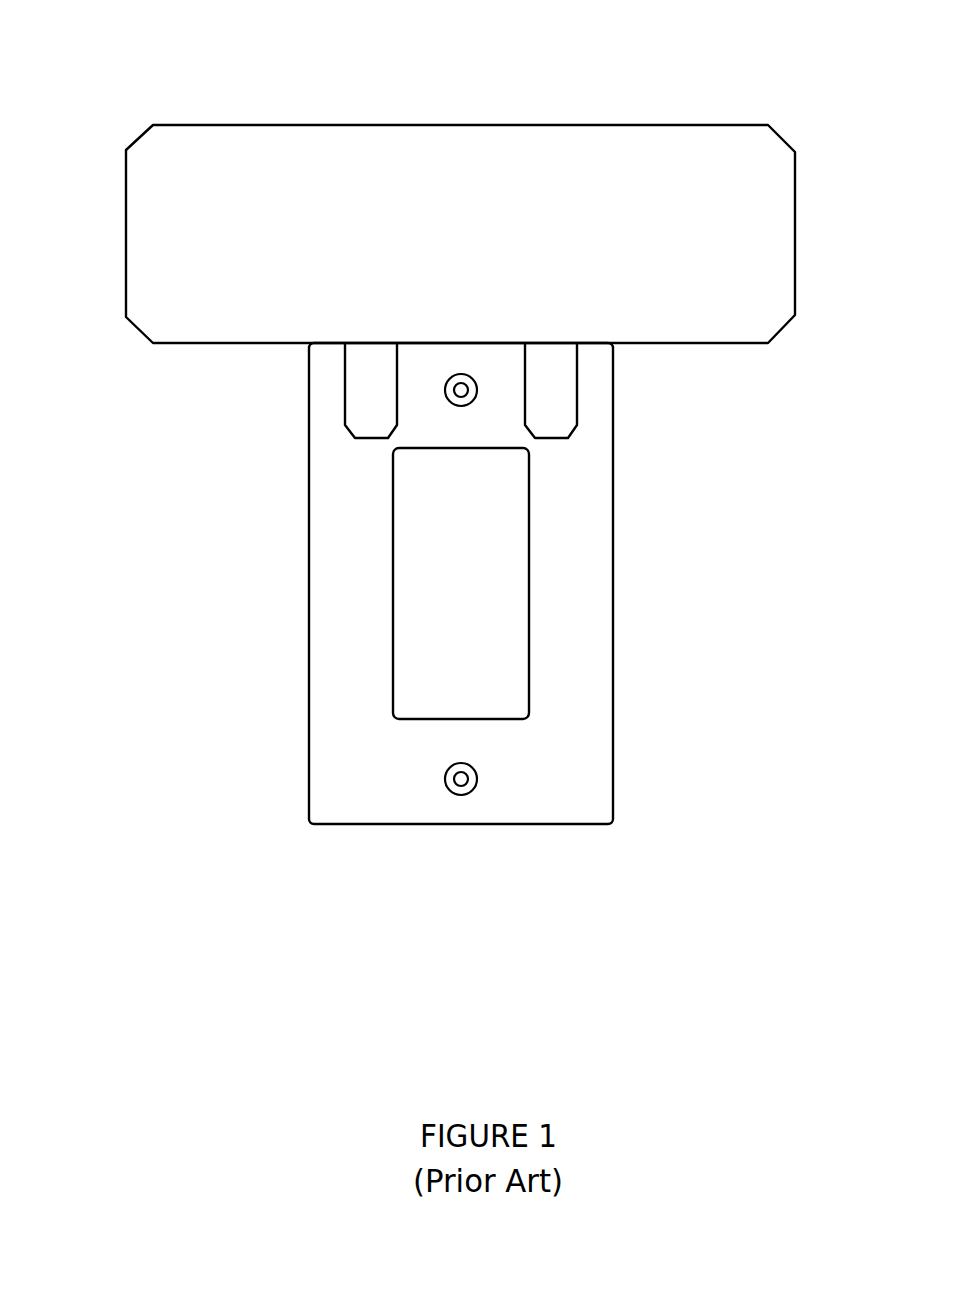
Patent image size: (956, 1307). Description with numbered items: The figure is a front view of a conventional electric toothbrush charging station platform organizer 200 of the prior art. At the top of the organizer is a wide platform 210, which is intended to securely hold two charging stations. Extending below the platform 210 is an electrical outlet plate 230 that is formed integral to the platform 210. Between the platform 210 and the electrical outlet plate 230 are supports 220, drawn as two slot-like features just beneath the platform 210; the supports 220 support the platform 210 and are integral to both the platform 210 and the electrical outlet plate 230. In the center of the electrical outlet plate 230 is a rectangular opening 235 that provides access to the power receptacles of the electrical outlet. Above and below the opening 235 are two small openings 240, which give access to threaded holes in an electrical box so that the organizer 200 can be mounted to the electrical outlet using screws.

The conventional electric toothbrush charging station platform organizer 200 is at (110, 40).
The platform 210 is at (268, 230).
The supports 220 is at (360, 383).
The electrical outlet plate 230 is at (559, 692).
The opening 235 is at (480, 580).
The openings 240 is at (471, 377).